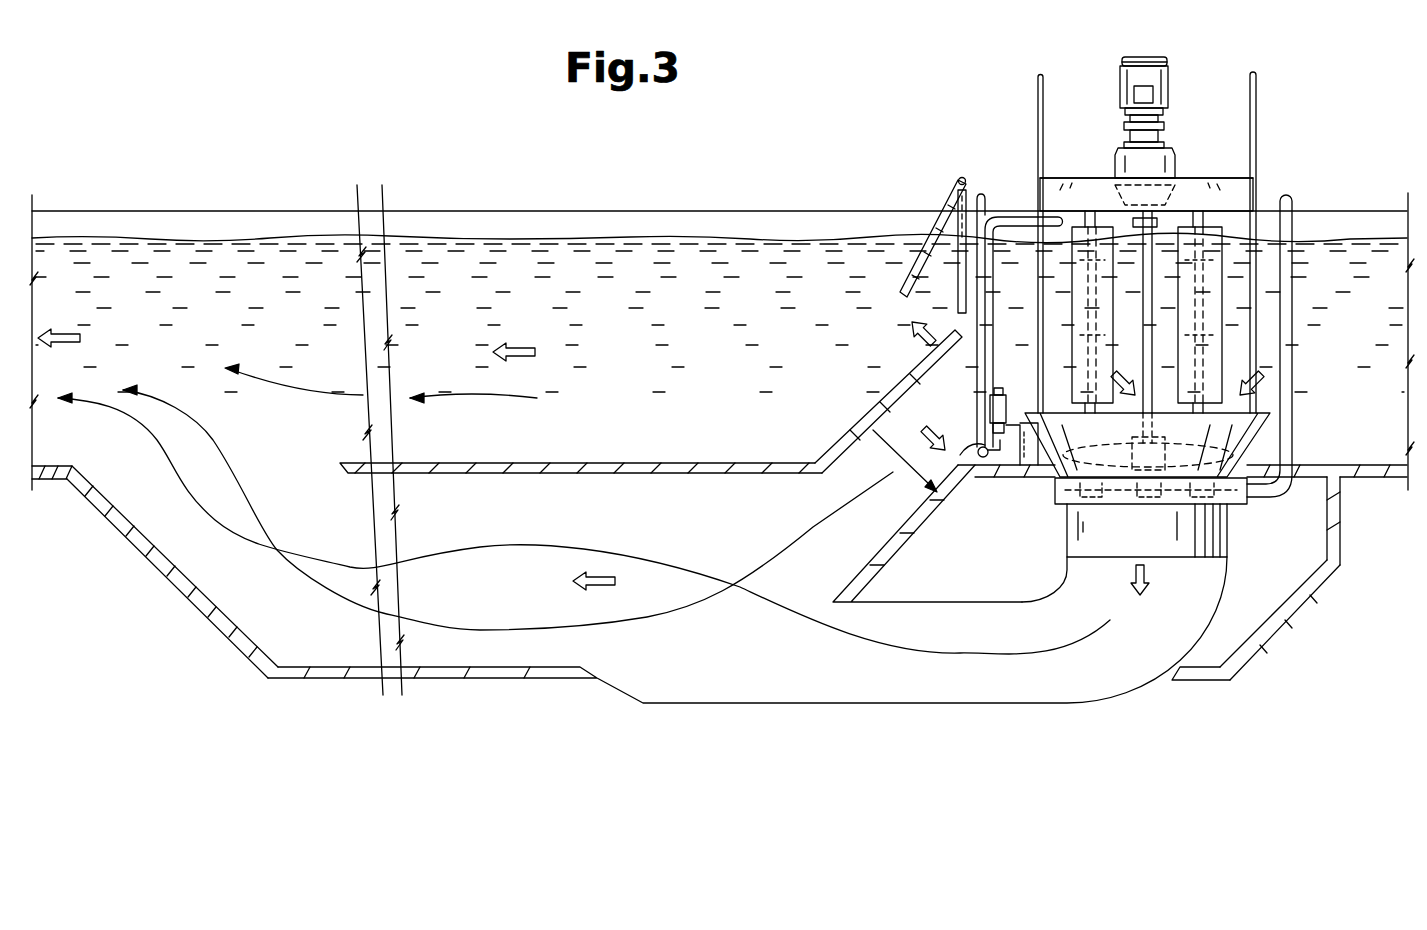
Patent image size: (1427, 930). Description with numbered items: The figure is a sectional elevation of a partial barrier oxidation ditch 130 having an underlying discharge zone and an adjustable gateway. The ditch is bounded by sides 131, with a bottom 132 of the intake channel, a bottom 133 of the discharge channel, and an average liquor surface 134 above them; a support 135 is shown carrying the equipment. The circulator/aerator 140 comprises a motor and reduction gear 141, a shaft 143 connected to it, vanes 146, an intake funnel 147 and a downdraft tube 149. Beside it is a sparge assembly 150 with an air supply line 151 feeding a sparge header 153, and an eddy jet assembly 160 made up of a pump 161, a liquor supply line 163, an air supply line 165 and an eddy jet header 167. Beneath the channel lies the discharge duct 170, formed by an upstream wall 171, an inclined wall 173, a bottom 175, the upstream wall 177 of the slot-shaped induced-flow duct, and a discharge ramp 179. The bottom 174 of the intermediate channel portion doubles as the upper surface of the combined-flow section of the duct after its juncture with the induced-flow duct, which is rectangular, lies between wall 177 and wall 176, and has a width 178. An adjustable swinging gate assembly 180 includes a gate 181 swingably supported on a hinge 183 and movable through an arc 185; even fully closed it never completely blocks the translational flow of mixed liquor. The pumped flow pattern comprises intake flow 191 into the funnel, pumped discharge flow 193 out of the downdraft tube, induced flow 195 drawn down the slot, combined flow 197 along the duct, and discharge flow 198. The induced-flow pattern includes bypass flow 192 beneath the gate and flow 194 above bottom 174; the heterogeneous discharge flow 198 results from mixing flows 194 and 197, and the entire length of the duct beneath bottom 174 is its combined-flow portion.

The barrier oxidation ditch 130 is at (481, 169).
The sides 131 is at (1337, 211).
The bottom of the intake channel 132 is at (1312, 464).
The bottom of the discharge channel 133 is at (45, 466).
The average liquor surface 134 is at (476, 238).
The support platform 135 is at (1235, 176).
The circulator/aerator 140 is at (1110, 72).
The motor and reduction gear 141 is at (1168, 82).
The shaft 143 is at (1145, 288).
The vanes 146 is at (1075, 297).
The intake funnel 147 is at (1250, 430).
The downdraft tube 149 is at (1222, 527).
The sparge assembly 150 is at (1300, 170).
The air supply line 151 is at (1290, 296).
The sparge header 153 is at (1060, 504).
The eddy jet assembly 160 is at (1000, 364).
The pump 161 is at (1005, 396).
The liquor supply line 163 is at (1020, 215).
The air supply line 165 is at (964, 193).
The eddy jet header 167 is at (975, 456).
The discharge duct 170 is at (1298, 630).
The upstream wall 171 is at (1342, 507).
The inclined wall 173 is at (1302, 592).
The bottom of the intermediate channel portion 174 is at (532, 463).
The bottom 175 is at (1207, 665).
The wall 176 is at (878, 408).
The upstream wall of the slot-shaped induced-flow duct 177 is at (915, 533).
The width 178 is at (880, 440).
The discharge ramp 179 is at (187, 582).
The adjustable swinging gate assembly 180 is at (892, 165).
The gate 181 is at (930, 237).
The hinge 183 is at (958, 180).
The arc 185 is at (920, 297).
The intake flow 191 is at (1262, 382).
The bypass flow 192 is at (960, 332).
The pumped discharge flow 193 is at (1130, 572).
The flow above bottom 194 is at (522, 346).
The induced flow 195 is at (925, 433).
The combined flow 197 is at (598, 581).
The discharge flow 198 is at (70, 334).